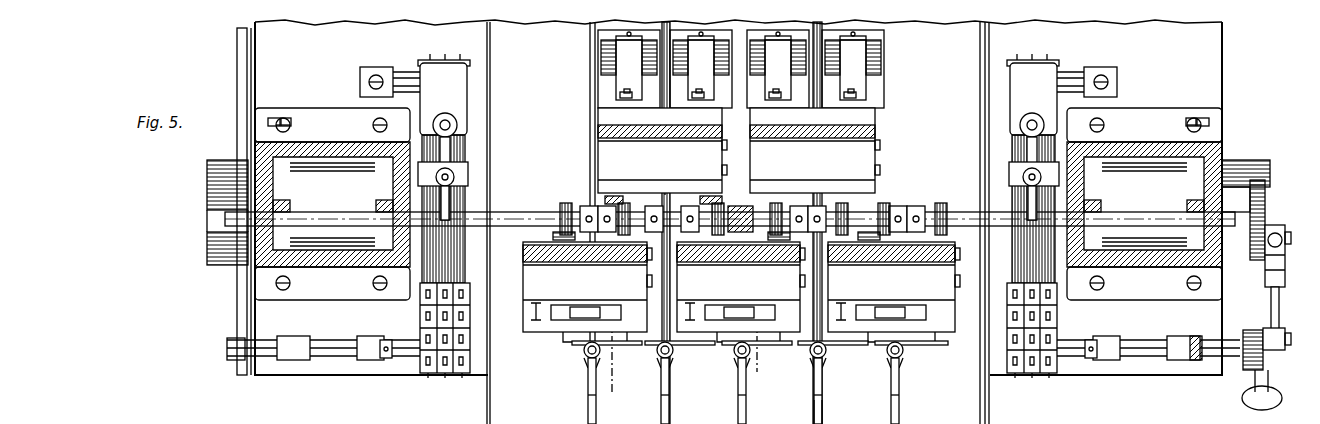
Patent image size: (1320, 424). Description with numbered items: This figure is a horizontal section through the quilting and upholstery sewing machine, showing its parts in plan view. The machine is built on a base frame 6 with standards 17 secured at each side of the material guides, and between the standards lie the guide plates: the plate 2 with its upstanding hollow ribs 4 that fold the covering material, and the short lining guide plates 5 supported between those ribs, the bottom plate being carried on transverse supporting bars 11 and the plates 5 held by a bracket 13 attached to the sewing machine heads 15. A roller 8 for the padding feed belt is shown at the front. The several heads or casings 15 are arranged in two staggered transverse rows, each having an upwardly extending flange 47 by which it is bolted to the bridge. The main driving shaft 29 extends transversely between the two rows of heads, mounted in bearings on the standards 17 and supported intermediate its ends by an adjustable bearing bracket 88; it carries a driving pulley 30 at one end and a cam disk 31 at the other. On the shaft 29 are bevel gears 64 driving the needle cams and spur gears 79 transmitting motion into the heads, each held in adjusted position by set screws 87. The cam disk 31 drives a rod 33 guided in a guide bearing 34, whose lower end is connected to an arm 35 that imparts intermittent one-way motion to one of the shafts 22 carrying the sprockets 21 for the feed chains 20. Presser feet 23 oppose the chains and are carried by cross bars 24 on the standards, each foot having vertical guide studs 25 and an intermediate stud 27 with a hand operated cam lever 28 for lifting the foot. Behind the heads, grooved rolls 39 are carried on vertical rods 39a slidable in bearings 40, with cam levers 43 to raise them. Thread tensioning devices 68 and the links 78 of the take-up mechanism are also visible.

The plate 2 is at (487, 412).
The upstanding hollow ribs 4 is at (640, 23).
The lining guide plates 5 is at (605, 78).
The base frame 6 is at (1293, 218).
The roller 8 is at (640, 23).
The transverse supporting bars 11 is at (835, 398).
The bracket 13 is at (741, 66).
The sewing machine head 15 is at (605, 160).
The standards 17 is at (325, 262).
The endless carriers or chains 20 is at (420, 316).
The sprockets 21 is at (422, 66).
The shafts 22 is at (340, 352).
The presser feet 23 is at (468, 245).
The cross bar 24 is at (452, 138).
The vertical guide studs 25 is at (457, 125).
The intermediate stud 27 is at (455, 175).
The hand operated cam lever 28 is at (452, 192).
The main driving shaft 29 is at (505, 215).
The driving pulley 30 is at (212, 248).
The cam disk 31 is at (1267, 196).
The rod 33 is at (1272, 305).
The guide bearing 34 is at (1268, 265).
The arm 35 is at (1265, 345).
The grooved rolls 39 is at (825, 360).
The vertical bar or rod 39a is at (812, 358).
The bearing 40 is at (643, 382).
The hand operated cam levers 43 is at (925, 348).
The upwardly extending flange 47 is at (648, 138).
The bevel gear 64 is at (575, 215).
The tensioning devices 68 is at (578, 210).
The link 78 is at (660, 208).
The spur gear 79 is at (700, 208).
The set screws 87 is at (690, 210).
The bearing bracket 88 is at (728, 210).